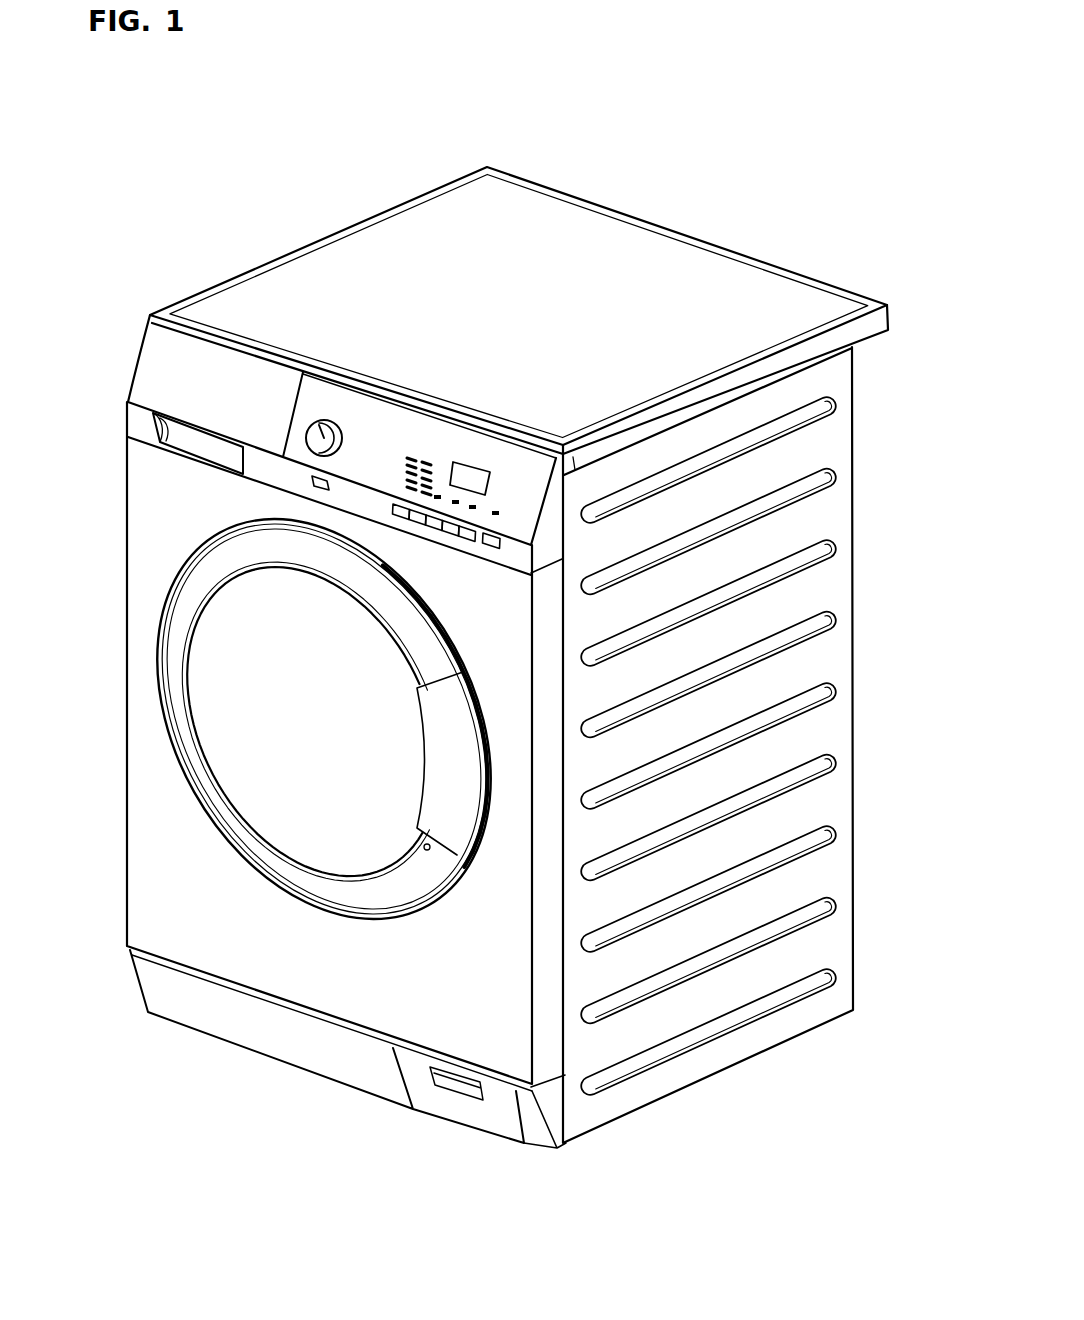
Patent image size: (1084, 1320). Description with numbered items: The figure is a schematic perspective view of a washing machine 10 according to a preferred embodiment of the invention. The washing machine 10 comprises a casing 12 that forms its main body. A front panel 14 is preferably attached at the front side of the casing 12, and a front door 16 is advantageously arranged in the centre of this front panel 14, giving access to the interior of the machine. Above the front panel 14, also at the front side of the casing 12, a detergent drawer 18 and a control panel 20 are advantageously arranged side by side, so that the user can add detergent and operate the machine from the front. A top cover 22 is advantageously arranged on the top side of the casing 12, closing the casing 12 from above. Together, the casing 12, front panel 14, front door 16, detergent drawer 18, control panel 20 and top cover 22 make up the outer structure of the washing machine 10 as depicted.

The washing machine 10 is at (611, 148).
The casing 12 is at (710, 1053).
The front panel 14 is at (298, 983).
The front door 16 is at (222, 657).
The detergent drawer 18 is at (150, 383).
The control panel 20 is at (370, 435).
The top cover 22 is at (427, 232).